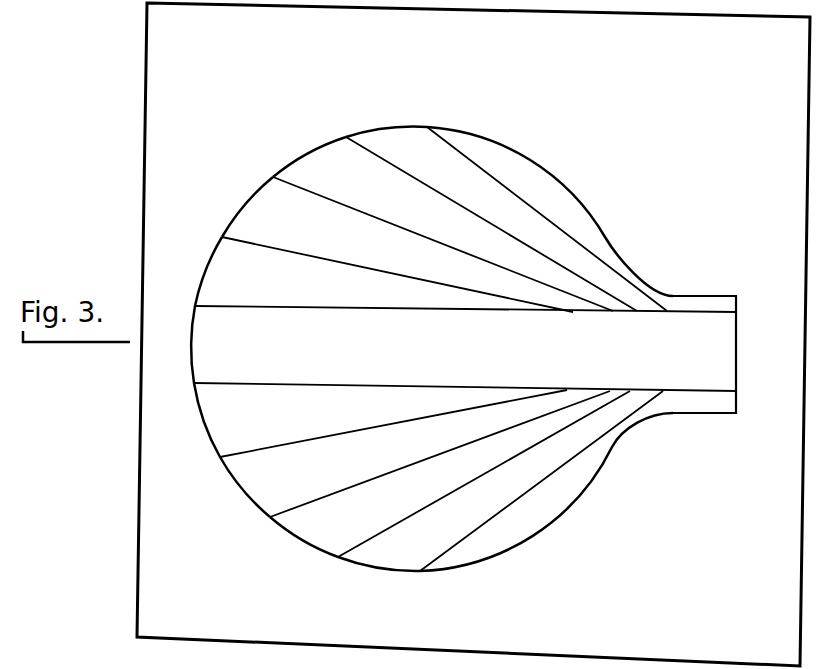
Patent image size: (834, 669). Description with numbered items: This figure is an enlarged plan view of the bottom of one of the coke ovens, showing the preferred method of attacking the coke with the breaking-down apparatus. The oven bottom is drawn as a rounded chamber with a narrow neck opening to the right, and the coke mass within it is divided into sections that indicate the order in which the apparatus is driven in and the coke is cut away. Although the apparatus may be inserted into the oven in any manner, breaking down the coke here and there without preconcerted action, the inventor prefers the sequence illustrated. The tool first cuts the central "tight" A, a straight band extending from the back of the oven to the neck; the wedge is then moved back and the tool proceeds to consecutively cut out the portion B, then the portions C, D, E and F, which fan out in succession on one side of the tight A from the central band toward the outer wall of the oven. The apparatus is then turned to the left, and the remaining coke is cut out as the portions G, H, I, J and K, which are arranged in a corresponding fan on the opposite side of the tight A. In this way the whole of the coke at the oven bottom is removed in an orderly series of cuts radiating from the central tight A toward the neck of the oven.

The tight A is at (463, 354).
The portion of coke B is at (384, 274).
The portion of coke C is at (417, 244).
The portion of coke D is at (455, 224).
The portion of coke E is at (506, 219).
The portion of coke F is at (550, 211).
The portion of coke G is at (380, 420).
The portion of coke H is at (415, 454).
The portion of coke I is at (450, 474).
The portion of coke J is at (500, 481).
The portion of coke K is at (546, 492).